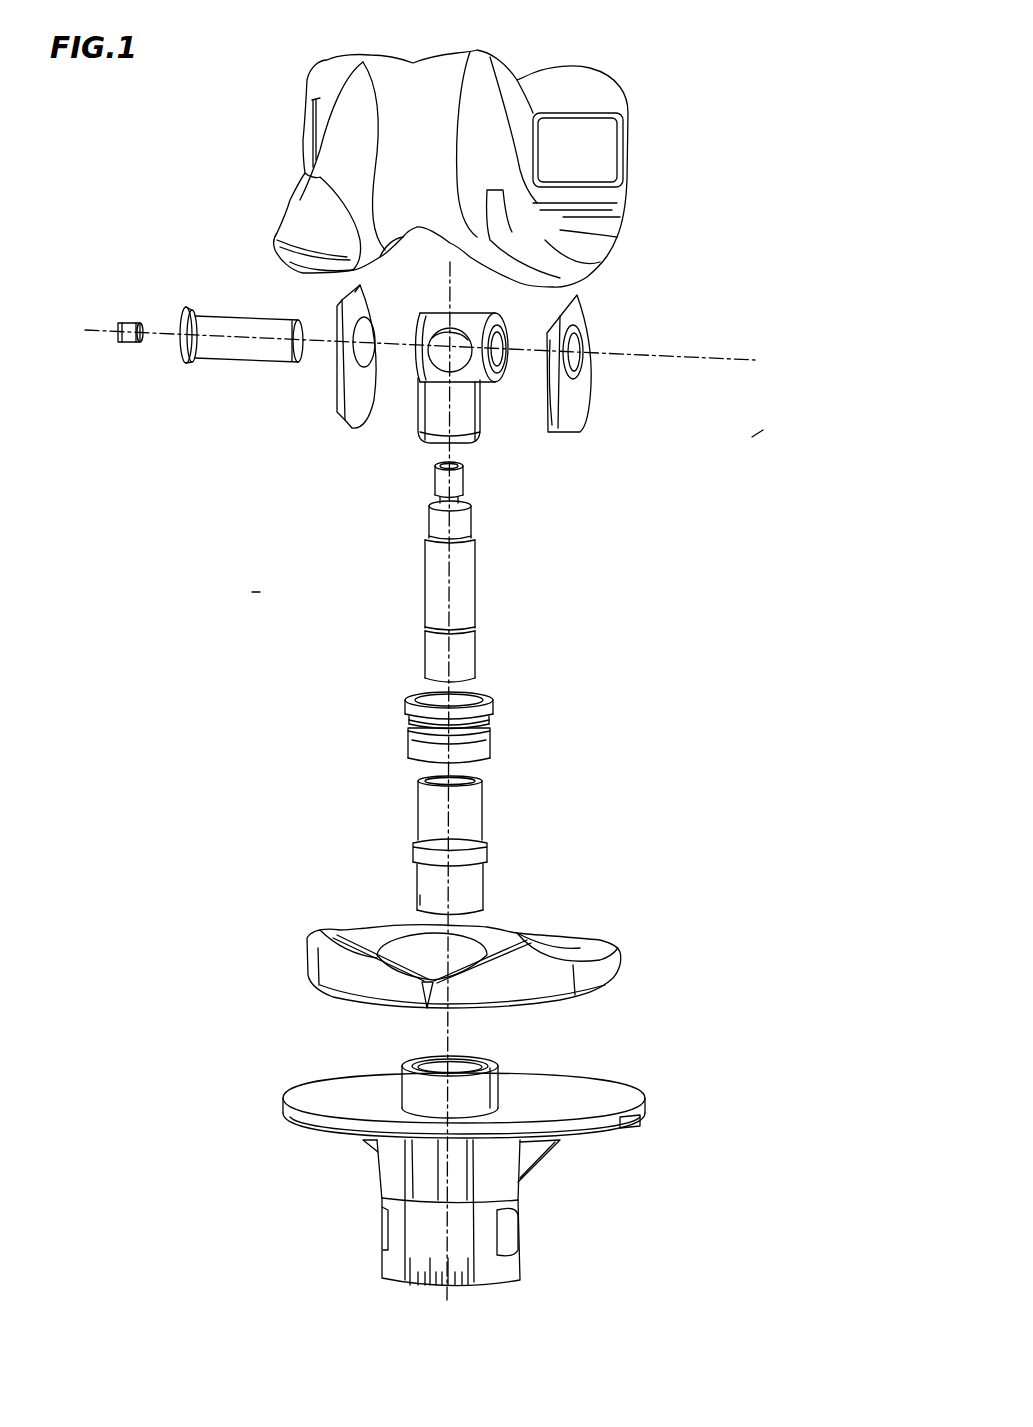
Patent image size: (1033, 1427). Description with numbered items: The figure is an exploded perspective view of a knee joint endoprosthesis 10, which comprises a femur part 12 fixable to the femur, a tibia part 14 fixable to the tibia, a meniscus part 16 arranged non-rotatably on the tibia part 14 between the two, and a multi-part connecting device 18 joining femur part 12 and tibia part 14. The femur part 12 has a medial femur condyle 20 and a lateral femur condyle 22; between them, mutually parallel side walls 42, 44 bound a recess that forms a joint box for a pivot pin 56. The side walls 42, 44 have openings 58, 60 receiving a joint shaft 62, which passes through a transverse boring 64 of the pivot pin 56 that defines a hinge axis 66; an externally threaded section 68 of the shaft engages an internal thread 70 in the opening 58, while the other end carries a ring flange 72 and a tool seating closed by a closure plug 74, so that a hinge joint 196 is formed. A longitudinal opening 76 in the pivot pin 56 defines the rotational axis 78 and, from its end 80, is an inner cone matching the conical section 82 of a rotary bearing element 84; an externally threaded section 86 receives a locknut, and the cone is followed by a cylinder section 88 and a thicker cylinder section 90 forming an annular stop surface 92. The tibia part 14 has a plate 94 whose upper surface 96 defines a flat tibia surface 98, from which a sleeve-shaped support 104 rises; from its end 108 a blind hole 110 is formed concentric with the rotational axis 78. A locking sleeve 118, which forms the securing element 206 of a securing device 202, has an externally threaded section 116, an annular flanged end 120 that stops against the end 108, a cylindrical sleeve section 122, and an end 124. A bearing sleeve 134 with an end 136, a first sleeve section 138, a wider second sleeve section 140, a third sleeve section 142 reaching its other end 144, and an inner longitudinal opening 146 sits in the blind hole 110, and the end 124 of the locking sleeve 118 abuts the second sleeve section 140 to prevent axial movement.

The knee joint endoprosthesis 10 is at (763, 430).
The femur part 12 is at (520, 181).
The tibia part 14 is at (458, 1146).
The meniscus part 16 is at (635, 937).
The connecting device 18 is at (245, 592).
The medial femur condyle 20 is at (560, 262).
The lateral femur condyle 22 is at (335, 262).
The side wall 42 is at (603, 369).
The side wall 44 is at (335, 386).
The pivot pin 56 is at (467, 376).
The opening 58 is at (572, 364).
The opening 60 is at (365, 360).
The joint shaft 62 is at (232, 333).
The transverse boring 64 is at (490, 335).
The hinge axis 66 is at (735, 358).
The externally threaded section 68 is at (290, 350).
The internal thread 70 is at (580, 340).
The ring flange 72 is at (188, 320).
The closure plug 74 is at (128, 322).
The longitudinal opening 76 is at (420, 372).
The rotational axis 78 is at (450, 268).
The end 80 is at (426, 563).
The conical section 82 is at (462, 518).
The rotary bearing element 84 is at (426, 572).
The externally threaded section 86 is at (440, 478).
The cylinder section 88 is at (458, 577).
The cylinder section 90 is at (450, 655).
The annular stop surface 92 is at (470, 627).
The plate 94 is at (466, 1072).
The upper surface 96 is at (450, 1076).
The tibia surface 98 is at (305, 1090).
The support 104 is at (436, 1062).
The end 108 is at (411, 1040).
The blind hole 110 is at (462, 1078).
The externally threaded section 116 is at (490, 706).
The locking sleeve 118 is at (438, 715).
The annular flanged end 120 is at (470, 695).
The cylindrical sleeve section 122 is at (456, 739).
The end 124 is at (485, 761).
The bearing sleeve 134 is at (431, 846).
The end 136 is at (456, 797).
The first sleeve section 138 is at (430, 810).
The second sleeve section 140 is at (480, 850).
The third sleeve section 142 is at (453, 893).
The end 144 is at (430, 912).
The longitudinal opening 146 is at (455, 782).
The hinge joint 196 is at (698, 208).
The securing device 202 is at (620, 802).
The securing element 206 is at (420, 745).